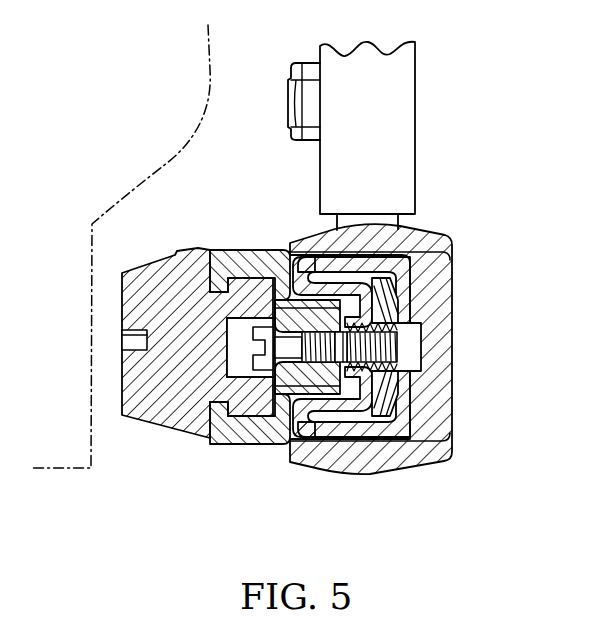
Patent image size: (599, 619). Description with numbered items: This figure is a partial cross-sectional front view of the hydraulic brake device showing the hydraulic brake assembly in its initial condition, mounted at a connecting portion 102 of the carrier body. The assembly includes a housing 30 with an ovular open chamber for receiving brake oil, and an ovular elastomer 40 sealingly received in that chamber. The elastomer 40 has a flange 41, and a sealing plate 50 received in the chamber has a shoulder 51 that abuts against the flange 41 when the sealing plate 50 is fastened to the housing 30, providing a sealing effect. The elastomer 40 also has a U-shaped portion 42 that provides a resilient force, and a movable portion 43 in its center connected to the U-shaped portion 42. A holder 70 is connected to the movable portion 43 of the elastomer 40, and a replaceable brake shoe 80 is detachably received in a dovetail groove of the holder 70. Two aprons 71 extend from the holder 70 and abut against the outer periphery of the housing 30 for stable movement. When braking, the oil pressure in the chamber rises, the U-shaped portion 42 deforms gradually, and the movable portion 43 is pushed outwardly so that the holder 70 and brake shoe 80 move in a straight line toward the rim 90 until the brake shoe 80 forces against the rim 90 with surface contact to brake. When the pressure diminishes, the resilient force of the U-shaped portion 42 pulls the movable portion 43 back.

The housing 30 is at (453, 242).
The elastomer 40 is at (325, 336).
The flange 41 is at (403, 278).
The U-shaped portion 42 is at (355, 300).
The movable portion 43 is at (327, 388).
The sealing plate 50 is at (388, 378).
The shoulder 51 is at (388, 290).
The holder 70 is at (257, 447).
The aprons 71 is at (303, 397).
The brake shoe 80 is at (160, 430).
The rim 90 is at (70, 443).
The connecting portion 102 is at (396, 142).